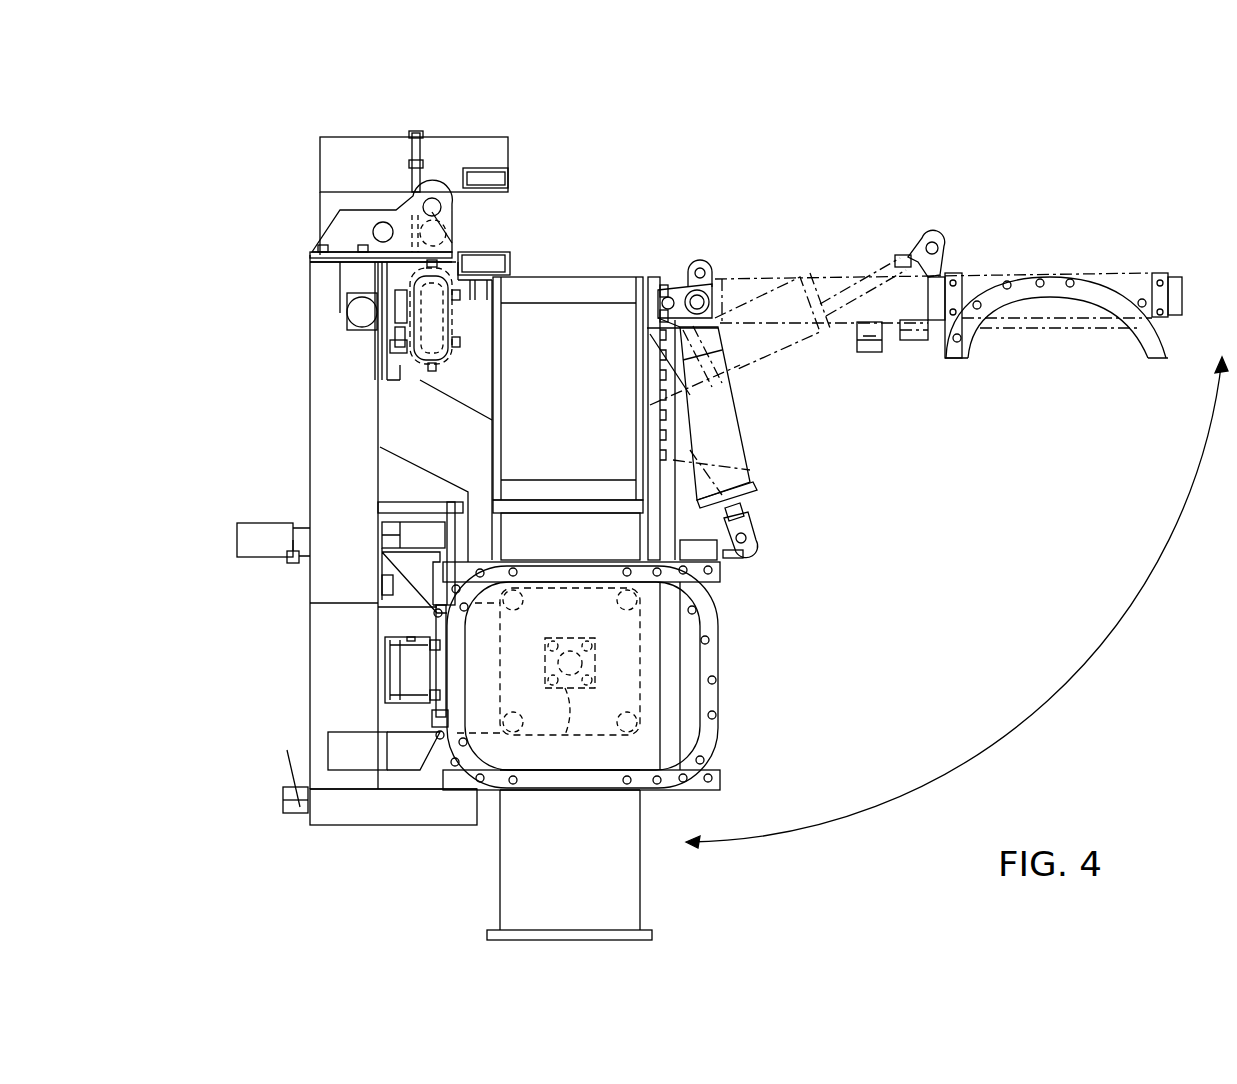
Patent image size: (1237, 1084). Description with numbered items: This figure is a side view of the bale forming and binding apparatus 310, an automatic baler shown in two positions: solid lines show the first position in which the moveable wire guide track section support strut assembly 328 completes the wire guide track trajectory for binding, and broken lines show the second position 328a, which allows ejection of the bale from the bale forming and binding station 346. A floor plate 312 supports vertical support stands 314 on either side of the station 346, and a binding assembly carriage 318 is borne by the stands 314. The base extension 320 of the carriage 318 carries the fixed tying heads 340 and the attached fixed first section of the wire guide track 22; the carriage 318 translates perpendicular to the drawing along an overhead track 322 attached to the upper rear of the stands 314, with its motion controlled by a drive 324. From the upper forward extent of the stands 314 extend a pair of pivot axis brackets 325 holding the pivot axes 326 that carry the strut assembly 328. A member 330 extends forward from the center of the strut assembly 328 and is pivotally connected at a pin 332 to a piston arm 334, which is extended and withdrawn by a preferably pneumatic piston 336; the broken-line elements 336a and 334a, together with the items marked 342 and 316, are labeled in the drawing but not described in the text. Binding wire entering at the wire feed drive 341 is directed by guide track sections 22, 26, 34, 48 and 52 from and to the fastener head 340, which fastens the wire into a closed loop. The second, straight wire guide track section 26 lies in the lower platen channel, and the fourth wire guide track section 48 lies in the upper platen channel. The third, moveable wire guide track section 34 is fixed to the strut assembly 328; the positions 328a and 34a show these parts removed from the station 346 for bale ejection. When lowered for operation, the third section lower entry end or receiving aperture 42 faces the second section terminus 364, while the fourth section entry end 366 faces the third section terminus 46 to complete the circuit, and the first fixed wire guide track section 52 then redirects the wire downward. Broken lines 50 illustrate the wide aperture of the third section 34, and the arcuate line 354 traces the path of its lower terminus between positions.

The bale forming and binding apparatus 310 is at (1052, 154).
The binding assembly carriage 318 is at (256, 441).
The drive 324 is at (355, 137).
The overhead track 322 is at (462, 250).
The wire feed drive 341 is at (262, 558).
The base extension 320 is at (330, 826).
The fixed first section of the wire guide track 22 is at (438, 770).
The fixed tying heads 340 is at (415, 658).
The first fixed wire guide track section 52 is at (463, 558).
The column 316 is at (572, 277).
The third guide track section in second position 34a is at (540, 513).
The upper fourth guide track section entry end 366 is at (626, 562).
The third, moveable wire guide track section 34 is at (722, 680).
The terminal end of the third wire guide track section 46 is at (700, 598).
The receiving aperture 42 is at (660, 790).
The fourth wire guide track section 48 is at (573, 588).
The second guide track section terminus 364 is at (630, 772).
The bale forming and binding station 346 is at (560, 740).
The second, straight wire guide track section 26 is at (588, 790).
The vertical support stands 314 is at (641, 886).
The floor plate 312 is at (652, 937).
The pivot axis brackets 325 is at (676, 275).
The pivot axes 326 is at (714, 286).
The piston 336 is at (735, 425).
The piston arm 334 is at (755, 513).
The pin 332 is at (760, 540).
The member 330 is at (745, 558).
The cylinder (phantom position) 336a is at (775, 285).
The piston rod (phantom position) 334a is at (865, 266).
The arcuate member 342 is at (1060, 277).
The second position of the moveable wire guide track support strut assembly 328a is at (1140, 262).
The broken lines 50 is at (948, 360).
The moveable wire guide track section support strut assembly 328 is at (746, 631).
The arcuate line 354 is at (1122, 622).